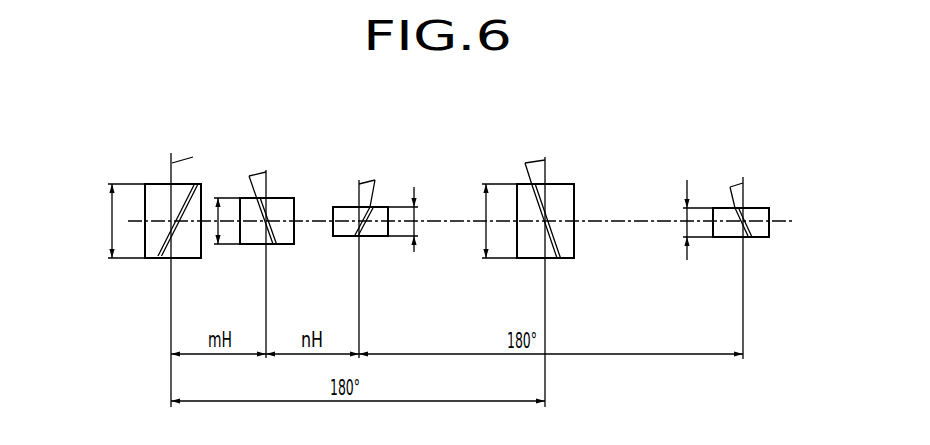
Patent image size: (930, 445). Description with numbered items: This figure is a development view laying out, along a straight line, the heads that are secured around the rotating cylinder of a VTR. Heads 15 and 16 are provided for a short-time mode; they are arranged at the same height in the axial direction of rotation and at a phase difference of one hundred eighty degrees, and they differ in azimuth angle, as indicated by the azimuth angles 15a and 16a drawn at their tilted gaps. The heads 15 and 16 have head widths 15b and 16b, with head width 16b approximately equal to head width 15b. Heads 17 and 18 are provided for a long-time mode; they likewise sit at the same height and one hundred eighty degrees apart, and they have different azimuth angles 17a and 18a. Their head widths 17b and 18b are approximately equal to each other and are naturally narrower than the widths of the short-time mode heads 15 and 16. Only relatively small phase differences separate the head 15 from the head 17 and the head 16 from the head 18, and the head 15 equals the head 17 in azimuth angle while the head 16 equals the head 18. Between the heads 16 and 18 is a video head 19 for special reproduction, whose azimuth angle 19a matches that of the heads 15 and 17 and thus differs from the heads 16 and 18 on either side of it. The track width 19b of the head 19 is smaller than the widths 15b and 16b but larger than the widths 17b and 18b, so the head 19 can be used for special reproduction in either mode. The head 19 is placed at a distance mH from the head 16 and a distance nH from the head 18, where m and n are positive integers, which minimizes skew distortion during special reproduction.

The head 15 is at (565, 183).
The azimuth angle 15a is at (533, 162).
The head width 15b is at (486, 230).
The head 16 is at (195, 183).
The azimuth angle 16a is at (182, 158).
The head width 16b is at (112, 222).
The head 17 is at (762, 207).
The azimuth angle 17a is at (730, 187).
The head width 17b is at (687, 226).
The head 18 is at (378, 207).
The azimuth angle 18a is at (367, 180).
The head width 18b is at (418, 229).
The video head 19 is at (283, 197).
The azimuth angle 19a is at (253, 176).
The track width 19b is at (218, 224).